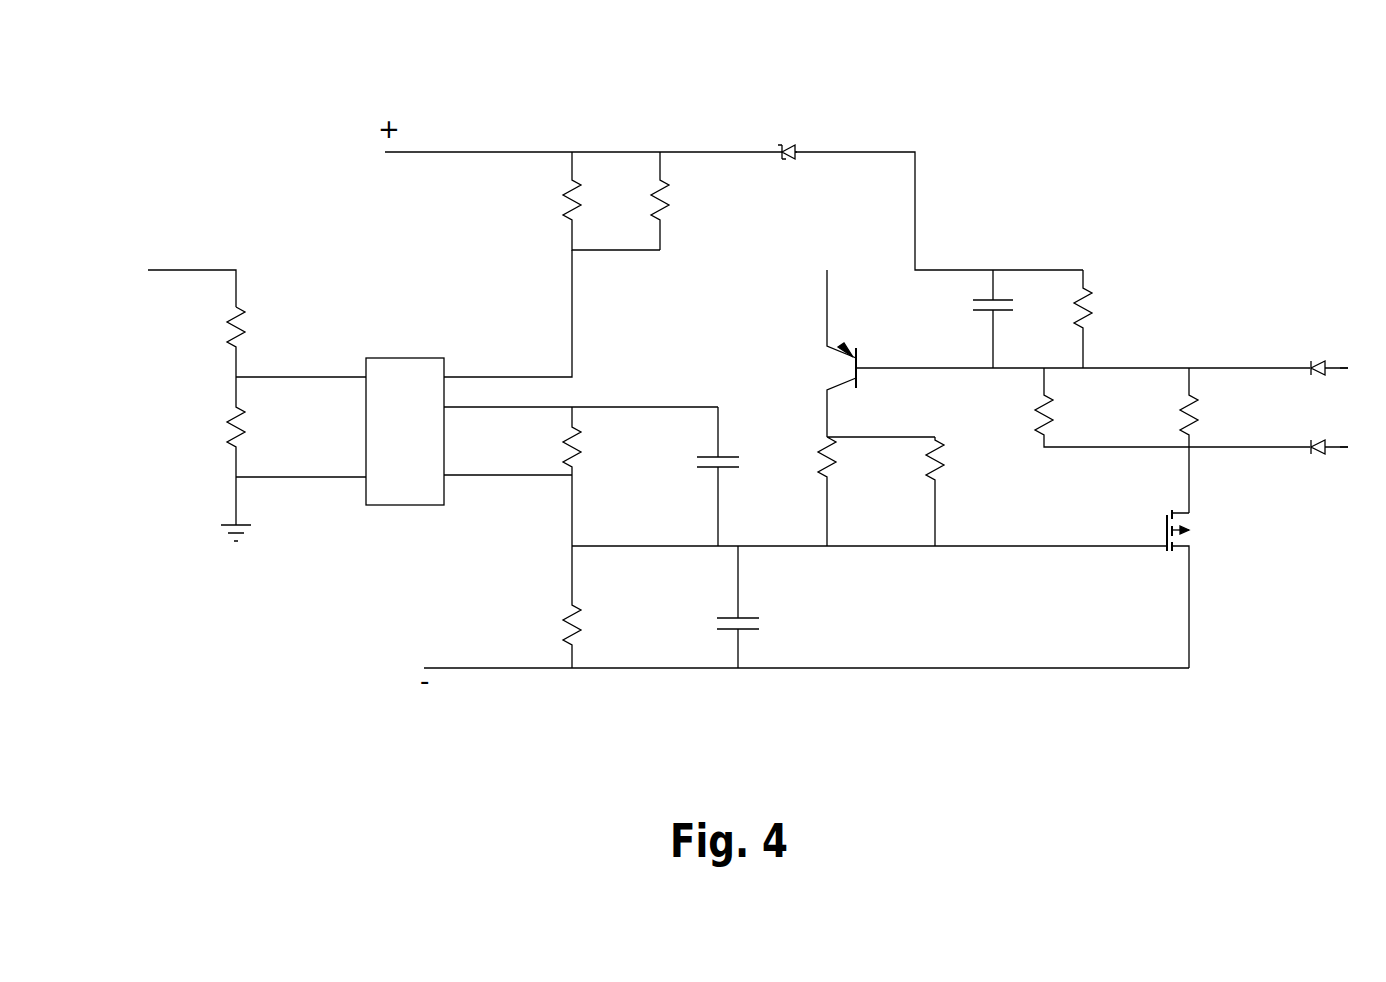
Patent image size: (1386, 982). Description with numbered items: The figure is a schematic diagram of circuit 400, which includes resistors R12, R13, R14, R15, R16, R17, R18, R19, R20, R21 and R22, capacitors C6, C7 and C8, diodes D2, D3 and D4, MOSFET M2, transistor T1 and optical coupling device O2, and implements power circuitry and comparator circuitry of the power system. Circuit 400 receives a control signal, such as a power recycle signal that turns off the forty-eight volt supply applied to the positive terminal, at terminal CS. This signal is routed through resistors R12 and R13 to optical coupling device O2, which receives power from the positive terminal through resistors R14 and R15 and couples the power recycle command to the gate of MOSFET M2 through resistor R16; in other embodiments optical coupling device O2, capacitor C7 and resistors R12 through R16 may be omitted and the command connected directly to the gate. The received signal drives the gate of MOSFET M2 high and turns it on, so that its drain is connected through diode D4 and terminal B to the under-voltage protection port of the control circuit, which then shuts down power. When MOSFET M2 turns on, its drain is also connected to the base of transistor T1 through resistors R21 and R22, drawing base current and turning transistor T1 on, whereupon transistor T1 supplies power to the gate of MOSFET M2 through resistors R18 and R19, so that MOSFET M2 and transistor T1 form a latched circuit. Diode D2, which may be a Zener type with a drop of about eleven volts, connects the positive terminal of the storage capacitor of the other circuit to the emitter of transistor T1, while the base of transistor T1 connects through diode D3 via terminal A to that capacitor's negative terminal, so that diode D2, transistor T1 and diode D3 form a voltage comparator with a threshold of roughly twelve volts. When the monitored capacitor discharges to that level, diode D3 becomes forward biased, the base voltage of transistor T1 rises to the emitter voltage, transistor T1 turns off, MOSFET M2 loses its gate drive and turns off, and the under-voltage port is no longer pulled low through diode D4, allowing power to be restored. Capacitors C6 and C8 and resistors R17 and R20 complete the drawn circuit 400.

The circuit 400 is at (306, 99).
The terminal CS is at (165, 284).
The resistor R12 is at (263, 341).
The resistor R13 is at (260, 459).
The resistor R14 is at (567, 201).
The resistor R15 is at (690, 201).
The resistor R16 is at (546, 476).
The resistor R17 is at (540, 607).
The resistor R18 is at (852, 491).
The resistor R19 is at (967, 491).
The resistor R20 is at (1116, 319).
The resistor R21 is at (1172, 407).
The resistor R22 is at (1228, 440).
The capacitor C6 is at (768, 607).
The capacitor C7 is at (689, 476).
The capacitor C8 is at (968, 319).
The diode D2 is at (795, 174).
The diode D3 is at (1328, 345).
The diode D4 is at (1329, 477).
The optical coupling device O2 is at (477, 377).
The transistor T1 is at (1046, 353).
The MOSFET M2 is at (1151, 579).
The terminal A is at (1357, 370).
The terminal B is at (1357, 449).